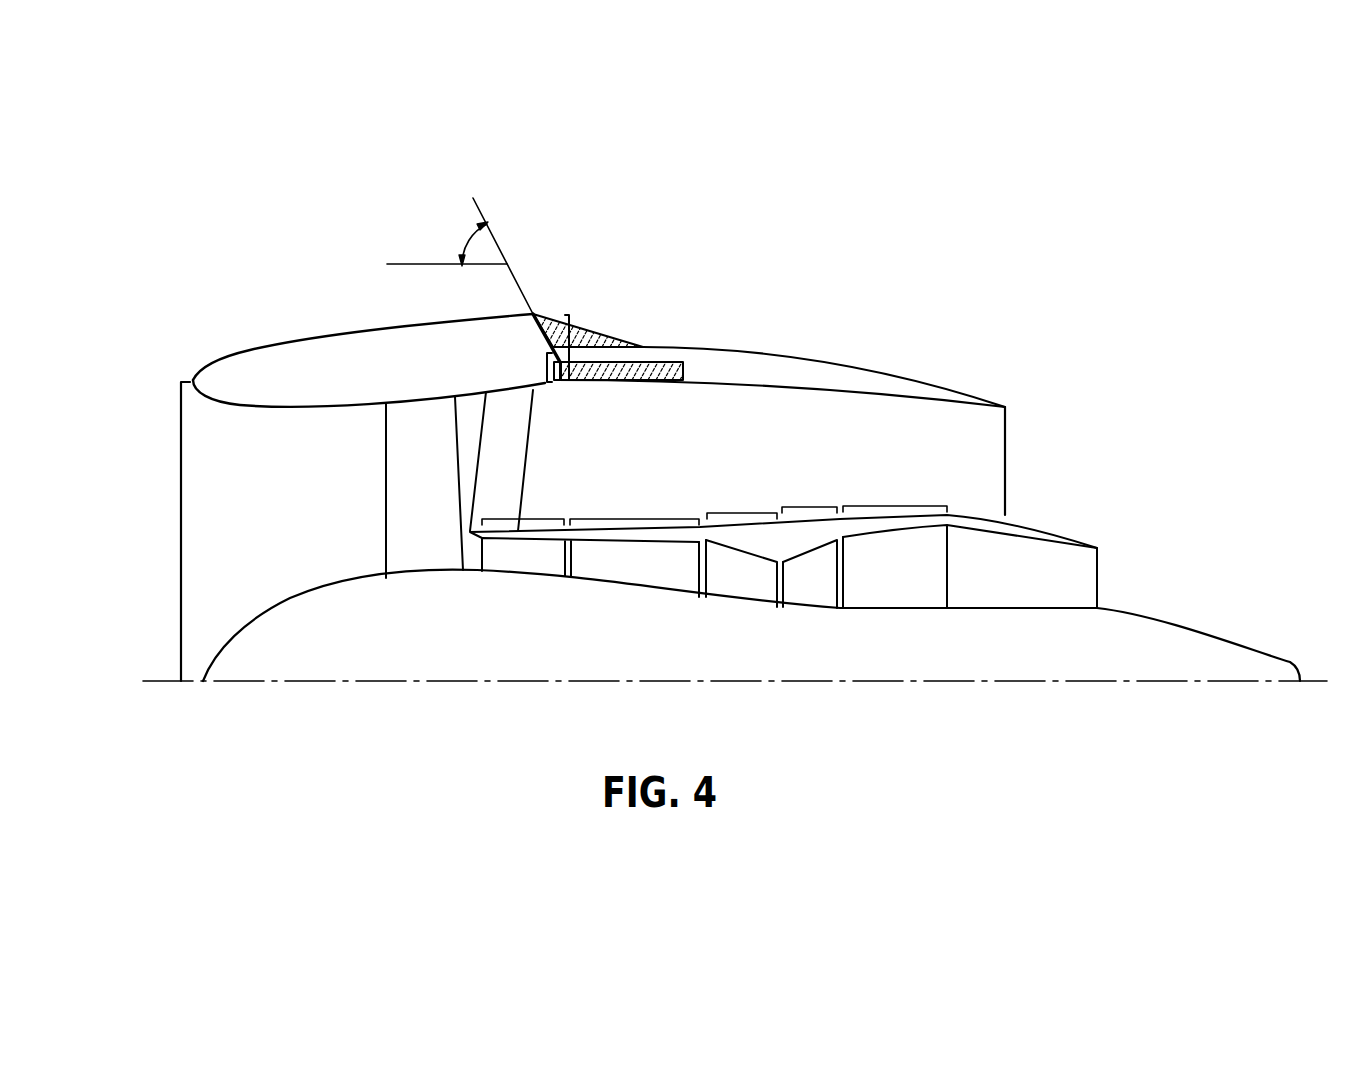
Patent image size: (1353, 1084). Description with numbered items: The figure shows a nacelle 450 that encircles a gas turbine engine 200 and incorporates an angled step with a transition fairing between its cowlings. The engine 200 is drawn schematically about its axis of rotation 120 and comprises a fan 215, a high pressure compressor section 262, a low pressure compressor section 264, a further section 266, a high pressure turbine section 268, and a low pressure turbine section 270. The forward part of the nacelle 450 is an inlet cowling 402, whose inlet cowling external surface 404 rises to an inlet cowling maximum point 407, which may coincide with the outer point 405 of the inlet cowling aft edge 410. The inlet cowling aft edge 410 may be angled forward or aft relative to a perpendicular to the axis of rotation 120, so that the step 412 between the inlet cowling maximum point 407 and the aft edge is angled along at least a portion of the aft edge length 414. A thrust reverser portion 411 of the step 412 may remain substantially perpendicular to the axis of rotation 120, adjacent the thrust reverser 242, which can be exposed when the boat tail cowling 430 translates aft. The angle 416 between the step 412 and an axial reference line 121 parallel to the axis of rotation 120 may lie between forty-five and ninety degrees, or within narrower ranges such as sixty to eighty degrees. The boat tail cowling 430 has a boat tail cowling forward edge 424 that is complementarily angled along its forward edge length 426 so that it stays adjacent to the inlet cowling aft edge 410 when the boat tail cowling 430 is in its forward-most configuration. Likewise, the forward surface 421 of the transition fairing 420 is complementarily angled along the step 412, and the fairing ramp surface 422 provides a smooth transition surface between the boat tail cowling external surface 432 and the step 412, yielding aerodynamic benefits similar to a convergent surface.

The axis of rotation 120 is at (173, 683).
The axial reference line 121 is at (400, 264).
The gas turbine engine 200 is at (268, 571).
The fan 215 is at (396, 488).
The thrust reverser 242 is at (657, 361).
The high pressure compressor section 262 is at (542, 518).
The low pressure compressor section 264 is at (644, 518).
The combustor section 266 is at (747, 512).
The high pressure turbine section 268 is at (811, 506).
The low pressure turbine section 270 is at (889, 505).
The inlet cowling 402 is at (369, 339).
The inlet cowling external surface 404 is at (313, 337).
The outer point 405 is at (537, 314).
The inlet cowling maximum point 407 is at (533, 314).
The inlet cowling aft edge 410 is at (562, 330).
The thrust reverser portion 411 is at (560, 383).
The step 412 is at (540, 331).
The aft edge length 414 is at (561, 368).
The angle 416 is at (466, 233).
The transition fairing 420 is at (568, 335).
The forward surface 421 is at (540, 346).
The fairing ramp surface 422 is at (620, 344).
The boat tail cowling forward edge 424 is at (580, 334).
The forward edge length 426 is at (547, 382).
The boat tail cowling 430 is at (780, 400).
The boat tail cowling external surface 432 is at (883, 372).
The nacelle 450 is at (166, 351).